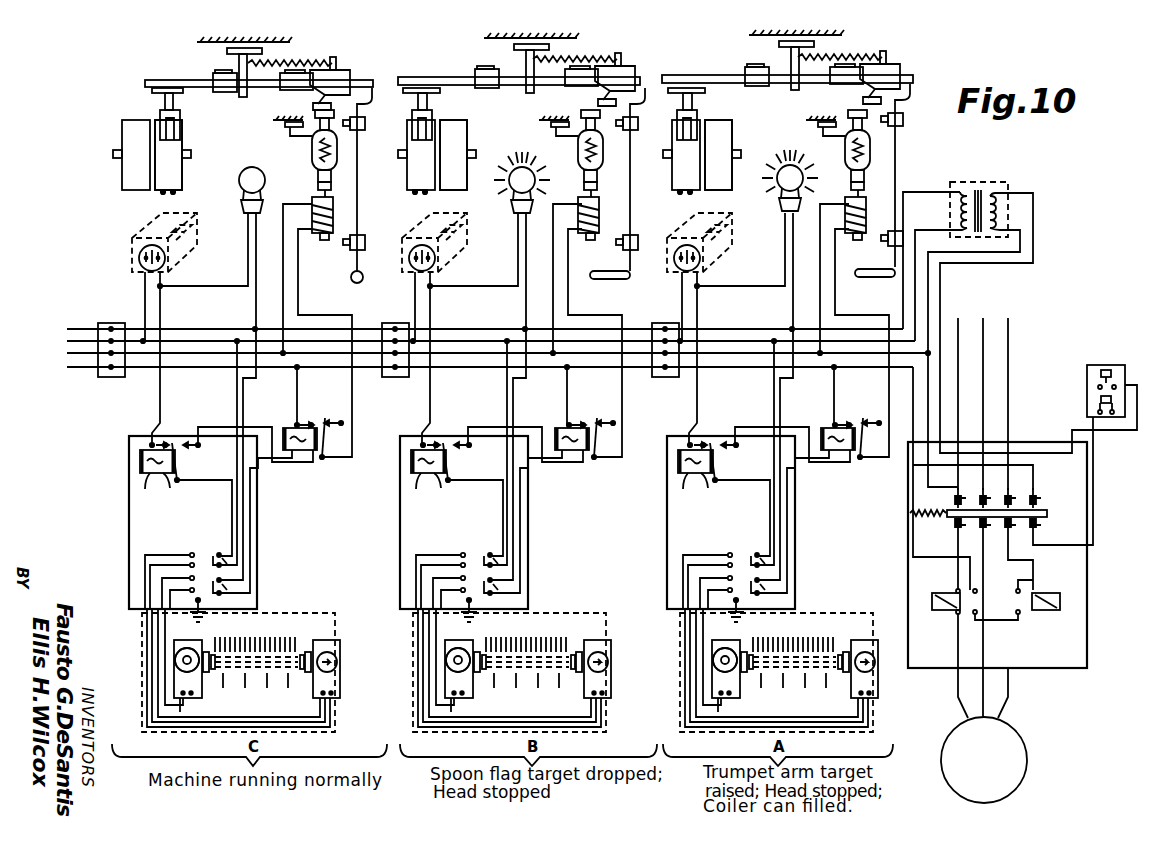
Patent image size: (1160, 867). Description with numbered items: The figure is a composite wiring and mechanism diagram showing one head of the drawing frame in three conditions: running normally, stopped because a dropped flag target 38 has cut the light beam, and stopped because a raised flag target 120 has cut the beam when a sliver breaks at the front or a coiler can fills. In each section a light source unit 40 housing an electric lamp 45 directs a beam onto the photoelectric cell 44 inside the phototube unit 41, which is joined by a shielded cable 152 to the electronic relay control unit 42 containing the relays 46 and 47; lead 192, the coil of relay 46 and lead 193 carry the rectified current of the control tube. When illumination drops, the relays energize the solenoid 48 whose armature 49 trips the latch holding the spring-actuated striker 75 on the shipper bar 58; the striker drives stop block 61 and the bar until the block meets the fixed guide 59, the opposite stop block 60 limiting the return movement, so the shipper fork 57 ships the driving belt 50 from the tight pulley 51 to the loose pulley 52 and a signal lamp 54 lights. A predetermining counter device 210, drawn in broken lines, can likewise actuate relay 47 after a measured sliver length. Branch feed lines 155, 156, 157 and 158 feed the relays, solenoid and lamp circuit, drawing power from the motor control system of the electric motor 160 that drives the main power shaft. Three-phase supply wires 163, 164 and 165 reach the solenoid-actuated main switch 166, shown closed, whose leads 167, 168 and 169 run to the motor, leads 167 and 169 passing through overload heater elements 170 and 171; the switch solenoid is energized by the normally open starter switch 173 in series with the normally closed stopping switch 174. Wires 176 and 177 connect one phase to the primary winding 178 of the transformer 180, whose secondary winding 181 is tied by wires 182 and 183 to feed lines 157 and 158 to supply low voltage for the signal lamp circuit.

The flag target 38 is at (297, 637).
The light source unit 40 is at (204, 694).
The phototube unit 41 is at (330, 645).
The electronic relay control unit 42 is at (127, 540).
The photoelectric cell 44 is at (340, 655).
The electric lamp 45 is at (193, 646).
The relay 46 is at (140, 463).
The relay 47 is at (294, 427).
The solenoid 48 is at (314, 238).
The armature 49 is at (318, 188).
The driving belt 50 is at (172, 193).
The tight pulley 51 is at (170, 176).
The loose pulley 52 is at (135, 177).
The signal lamp 54 is at (252, 168).
The shipper fork 57 is at (160, 116).
The shipper bar 58 is at (195, 80).
The guide 59 is at (242, 97).
The stop block 60 is at (226, 92).
The stop block 61 is at (276, 90).
The striker 75 is at (345, 70).
The flag target 120 is at (288, 690).
The shielded cable 152 is at (337, 712).
The branch feed line 155 is at (67, 367).
The branch feed line 156 is at (67, 353).
The branch feed line 157 is at (67, 341).
The branch feed line 158 is at (67, 329).
The electric motor 160 is at (1010, 777).
The supply wire 163 is at (960, 318).
The supply wire 164 is at (985, 320).
The supply wire 165 is at (1010, 330).
The main switch 166 is at (950, 518).
The lead 167 is at (956, 575).
The lead 168 is at (980, 580).
The lead 169 is at (1010, 548).
The overload heater element 170 is at (945, 611).
The overload heater element 171 is at (1047, 611).
The motor starter switch 173 is at (1087, 367).
The motor stopping switch 174 is at (1088, 403).
The wire 176 is at (931, 291).
The wire 177 is at (942, 305).
The primary winding 178 is at (992, 186).
The transformer 180 is at (1010, 181).
The secondary winding 181 is at (962, 186).
The wire 182 is at (926, 223).
The wire 183 is at (927, 192).
The lead 192 is at (418, 495).
The lead 193 is at (451, 495).
The counter device 210 is at (183, 263).